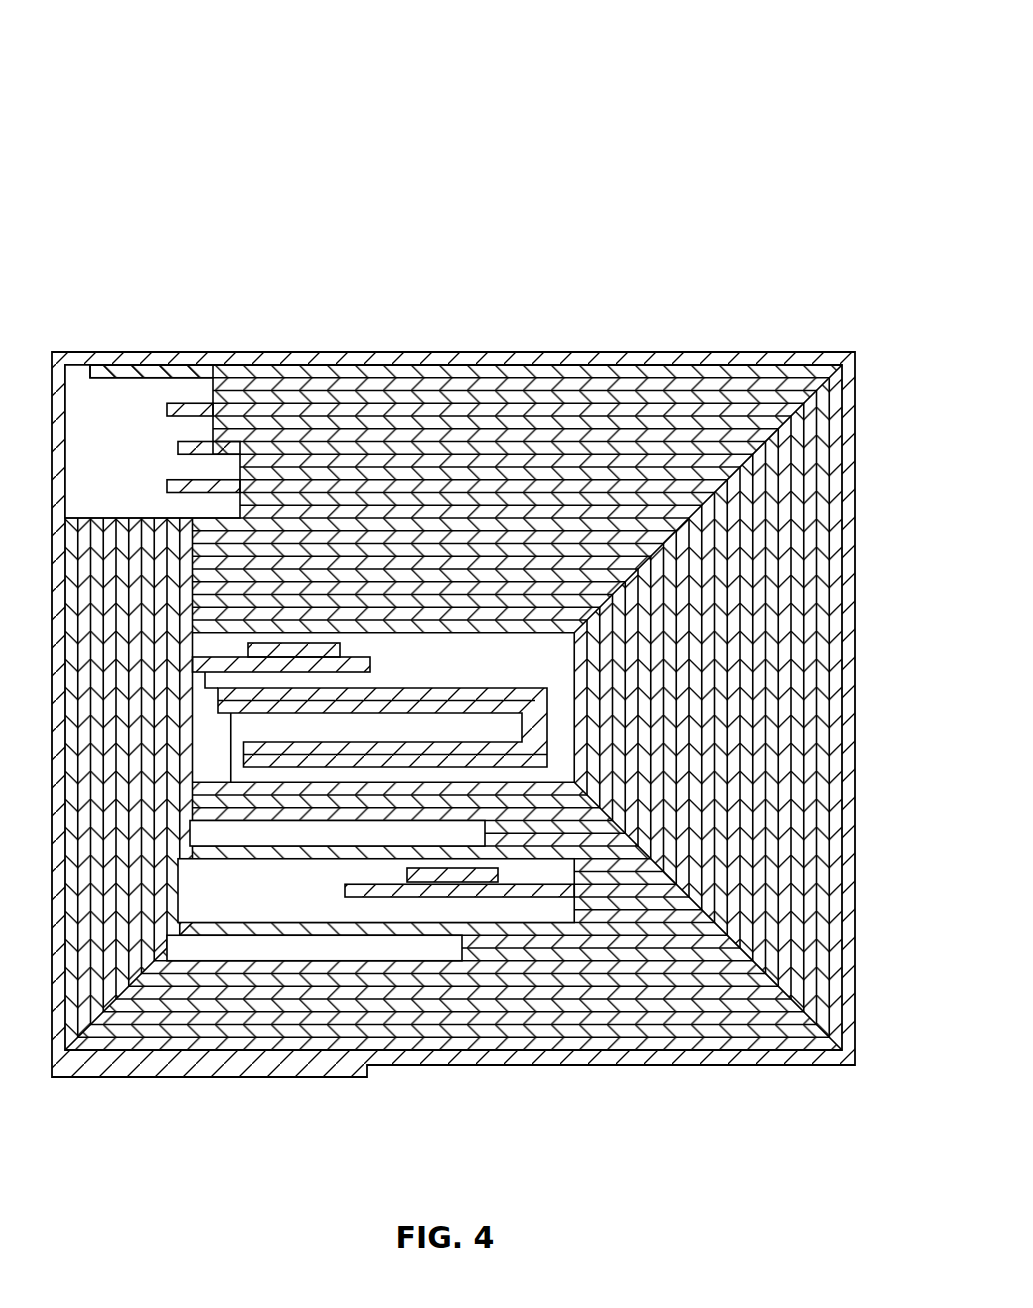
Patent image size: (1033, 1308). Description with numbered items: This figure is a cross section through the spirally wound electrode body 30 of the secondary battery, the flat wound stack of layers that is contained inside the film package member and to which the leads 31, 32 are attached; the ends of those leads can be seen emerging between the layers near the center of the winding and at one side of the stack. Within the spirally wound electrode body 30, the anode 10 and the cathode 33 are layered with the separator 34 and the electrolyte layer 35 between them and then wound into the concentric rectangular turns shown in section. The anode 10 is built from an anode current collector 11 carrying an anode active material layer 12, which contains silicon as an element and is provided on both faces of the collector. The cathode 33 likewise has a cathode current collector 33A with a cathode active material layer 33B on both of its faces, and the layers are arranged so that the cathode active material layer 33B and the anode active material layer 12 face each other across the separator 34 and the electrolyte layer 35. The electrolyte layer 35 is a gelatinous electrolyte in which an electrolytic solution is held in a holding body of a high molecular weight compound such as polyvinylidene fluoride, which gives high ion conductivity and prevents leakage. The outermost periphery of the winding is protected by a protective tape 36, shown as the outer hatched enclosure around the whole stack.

The spirally wound electrode body 30 is at (652, 86).
The anode 10 is at (186, 344).
The anode current collector 11 is at (115, 372).
The anode active material layer 12 is at (262, 515).
The lead 31 is at (452, 874).
The lead 32 is at (270, 650).
The cathode 33 is at (453, 567).
The cathode current collector 33A is at (352, 450).
The cathode active material layer 33B is at (513, 460).
The separator 34 is at (548, 482).
The electrolyte layer 35 is at (657, 497).
The protective tape 36 is at (800, 365).